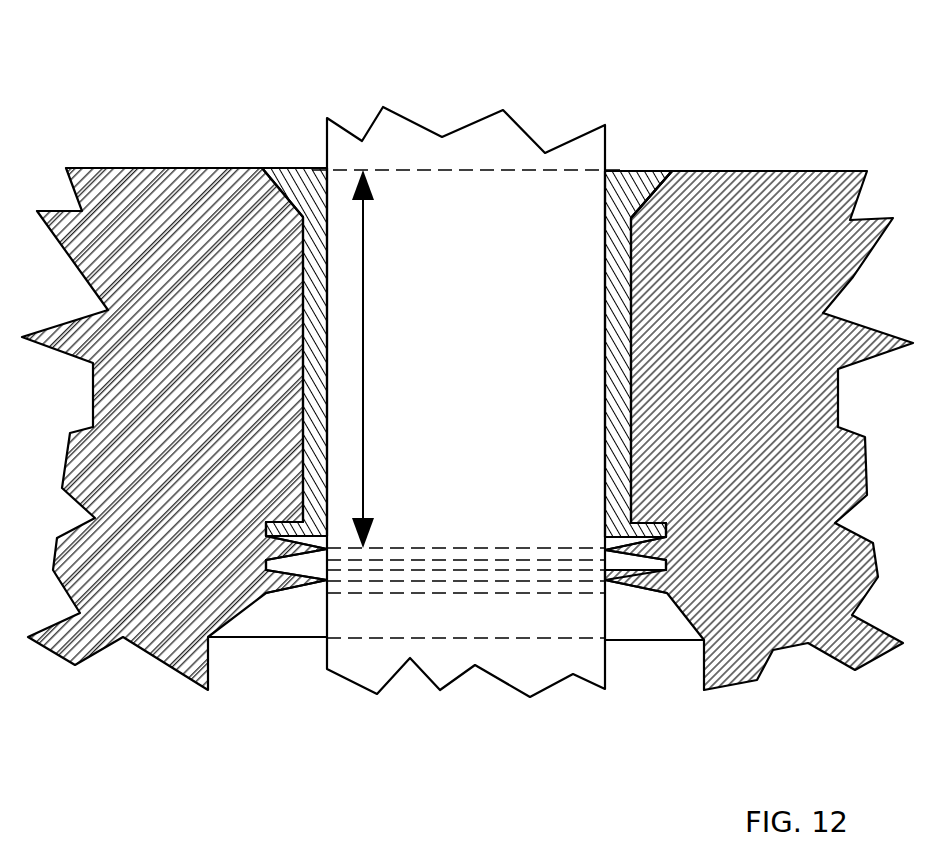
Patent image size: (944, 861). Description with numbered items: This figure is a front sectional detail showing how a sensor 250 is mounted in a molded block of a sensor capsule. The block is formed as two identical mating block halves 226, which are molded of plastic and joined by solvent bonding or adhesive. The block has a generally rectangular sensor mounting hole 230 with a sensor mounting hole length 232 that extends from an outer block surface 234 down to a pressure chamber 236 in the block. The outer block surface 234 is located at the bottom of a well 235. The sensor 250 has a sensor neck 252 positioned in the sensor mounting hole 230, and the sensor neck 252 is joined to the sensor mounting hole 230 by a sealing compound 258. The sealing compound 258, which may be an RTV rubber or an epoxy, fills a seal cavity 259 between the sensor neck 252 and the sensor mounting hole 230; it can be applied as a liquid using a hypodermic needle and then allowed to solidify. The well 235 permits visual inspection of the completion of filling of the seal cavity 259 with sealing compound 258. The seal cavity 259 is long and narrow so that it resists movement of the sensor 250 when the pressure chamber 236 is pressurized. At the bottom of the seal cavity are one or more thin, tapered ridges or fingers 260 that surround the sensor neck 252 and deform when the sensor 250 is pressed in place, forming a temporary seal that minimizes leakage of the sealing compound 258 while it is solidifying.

The block half 226 is at (175, 672).
The sensor mounting hole 230 is at (633, 420).
The sensor mounting hole length 232 is at (365, 340).
The outer block surface 234 is at (624, 207).
The well 235 is at (320, 250).
The pressure chamber 236 is at (275, 682).
The sensor 250 is at (472, 127).
The sensor neck 252 is at (480, 417).
The sealing compound 258 is at (320, 252).
The seal cavity 259 is at (620, 332).
The ridges or fingers 260 is at (640, 549).